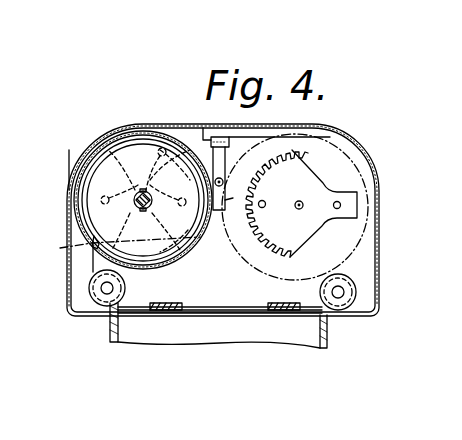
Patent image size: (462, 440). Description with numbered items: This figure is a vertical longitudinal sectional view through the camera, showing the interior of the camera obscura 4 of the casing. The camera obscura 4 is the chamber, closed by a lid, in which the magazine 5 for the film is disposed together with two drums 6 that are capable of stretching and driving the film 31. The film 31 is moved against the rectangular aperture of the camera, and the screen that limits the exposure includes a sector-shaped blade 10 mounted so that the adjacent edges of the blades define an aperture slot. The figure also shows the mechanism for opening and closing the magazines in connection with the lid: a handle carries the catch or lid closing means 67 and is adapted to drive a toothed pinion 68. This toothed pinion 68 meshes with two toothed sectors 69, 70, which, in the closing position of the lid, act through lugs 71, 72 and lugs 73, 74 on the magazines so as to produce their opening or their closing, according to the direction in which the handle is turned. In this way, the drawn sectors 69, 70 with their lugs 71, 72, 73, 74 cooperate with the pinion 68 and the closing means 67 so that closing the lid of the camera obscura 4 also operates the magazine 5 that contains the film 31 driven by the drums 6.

The camera obscura 4 is at (362, 150).
The magazine 5 is at (94, 150).
The drums 6 is at (94, 290).
The blade 10 is at (325, 322).
The film 31 is at (92, 262).
The catch or lid closing means 67 is at (207, 165).
The toothed pinion 68 is at (264, 201).
The toothed sector 69 is at (92, 243).
The toothed sector 70 is at (255, 236).
The lug 71 is at (80, 165).
The lug 72 is at (138, 126).
The lug 73 is at (300, 165).
The lug 74 is at (341, 205).